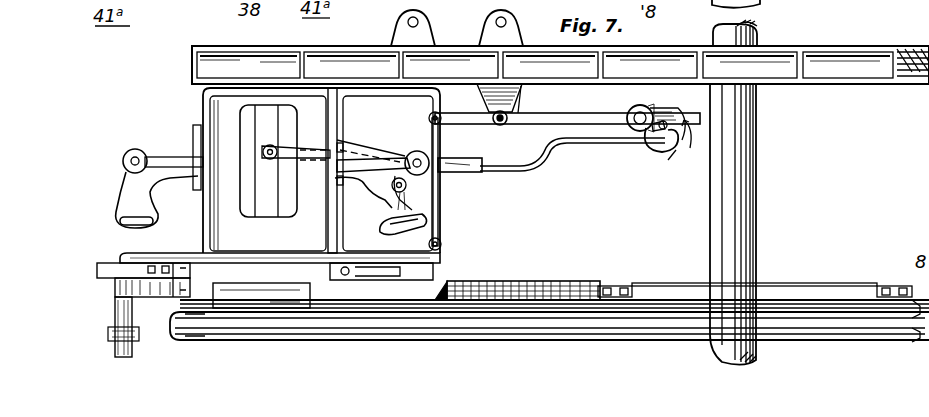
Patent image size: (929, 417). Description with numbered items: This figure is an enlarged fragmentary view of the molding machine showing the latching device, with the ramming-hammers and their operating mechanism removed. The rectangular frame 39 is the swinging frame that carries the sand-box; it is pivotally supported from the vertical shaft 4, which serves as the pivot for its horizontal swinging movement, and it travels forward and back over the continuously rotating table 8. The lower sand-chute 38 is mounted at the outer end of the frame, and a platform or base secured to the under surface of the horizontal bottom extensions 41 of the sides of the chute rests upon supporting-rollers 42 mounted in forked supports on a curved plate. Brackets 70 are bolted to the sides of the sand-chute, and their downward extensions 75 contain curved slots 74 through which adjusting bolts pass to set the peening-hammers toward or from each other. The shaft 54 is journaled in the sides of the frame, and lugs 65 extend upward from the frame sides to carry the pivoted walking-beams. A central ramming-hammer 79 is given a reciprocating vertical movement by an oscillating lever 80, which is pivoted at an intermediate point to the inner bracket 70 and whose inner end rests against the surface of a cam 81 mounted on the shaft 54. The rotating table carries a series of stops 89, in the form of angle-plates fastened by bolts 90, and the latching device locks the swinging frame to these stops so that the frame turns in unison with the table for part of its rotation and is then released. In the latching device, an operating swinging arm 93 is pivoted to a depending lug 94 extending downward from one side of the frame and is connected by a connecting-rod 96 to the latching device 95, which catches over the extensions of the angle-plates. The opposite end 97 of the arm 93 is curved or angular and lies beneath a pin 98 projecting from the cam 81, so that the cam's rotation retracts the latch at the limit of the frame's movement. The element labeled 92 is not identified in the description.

The vertical shaft 4 is at (727, 148).
The rotating table 8 is at (570, 315).
The sand-chute 38 is at (207, 228).
The rectangular frame 39 is at (196, 63).
The horizontal bottom extensions 41 is at (120, 286).
The supporting-rollers 42 is at (118, 312).
The shaft 54 is at (640, 112).
The lugs 65 is at (457, 28).
The brackets 70 is at (163, 158).
The curved slots 74 is at (122, 223).
The downward extensions 75 is at (130, 187).
The central ramming-hammer 79 is at (278, 148).
The oscillating lever 80 is at (560, 142).
The cam 81 is at (664, 140).
The stops 89 is at (377, 2).
The bolts 90 is at (637, 290).
The guide 92 is at (928, 104).
The operating swinging arm 93 is at (530, 118).
The depending lug 94 is at (512, 100).
The latching device 95 is at (442, 249).
The connecting-rod 96 is at (455, 175).
The opposite end 97 is at (642, 130).
The pin 98 is at (694, 134).